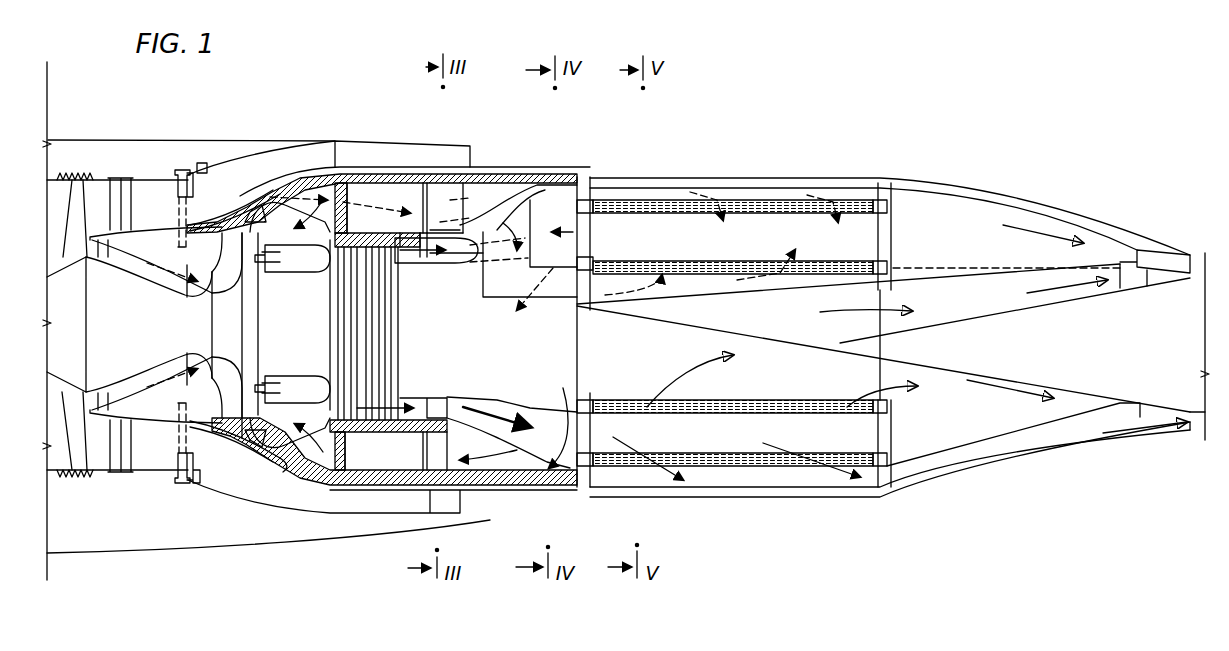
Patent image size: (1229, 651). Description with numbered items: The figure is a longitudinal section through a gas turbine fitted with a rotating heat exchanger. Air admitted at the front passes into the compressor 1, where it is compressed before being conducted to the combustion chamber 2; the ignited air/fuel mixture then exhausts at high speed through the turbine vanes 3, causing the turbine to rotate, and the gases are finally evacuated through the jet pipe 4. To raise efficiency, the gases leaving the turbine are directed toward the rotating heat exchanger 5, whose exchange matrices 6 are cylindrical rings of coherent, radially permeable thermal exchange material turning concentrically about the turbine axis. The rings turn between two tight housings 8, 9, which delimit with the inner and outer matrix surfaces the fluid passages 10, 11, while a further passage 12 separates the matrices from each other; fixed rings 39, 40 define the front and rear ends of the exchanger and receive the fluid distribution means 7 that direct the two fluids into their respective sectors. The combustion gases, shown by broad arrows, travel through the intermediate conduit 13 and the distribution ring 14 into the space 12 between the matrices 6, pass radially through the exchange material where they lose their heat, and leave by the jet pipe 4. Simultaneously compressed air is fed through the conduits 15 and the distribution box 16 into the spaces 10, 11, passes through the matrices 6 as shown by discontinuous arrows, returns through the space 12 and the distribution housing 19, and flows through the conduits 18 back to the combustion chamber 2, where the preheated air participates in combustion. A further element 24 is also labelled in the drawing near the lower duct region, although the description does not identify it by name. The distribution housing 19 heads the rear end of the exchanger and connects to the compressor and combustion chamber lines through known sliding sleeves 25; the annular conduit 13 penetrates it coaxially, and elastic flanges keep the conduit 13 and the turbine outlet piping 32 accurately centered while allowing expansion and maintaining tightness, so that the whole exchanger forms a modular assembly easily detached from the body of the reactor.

The compressor 1 is at (77, 331).
The combustion chamber 2 is at (283, 385).
The turbine vanes 3 is at (333, 330).
The jet pipe 4 is at (1163, 263).
The rotating heat exchanger 5 is at (668, 347).
The exchange matrices 6 is at (743, 263).
The fluid distribution means 7 is at (550, 338).
The tight housing 8 is at (810, 183).
The tight housing 9 is at (803, 297).
The fluid passage 10 is at (847, 197).
The fluid passage 11 is at (857, 283).
The passage 12 is at (853, 227).
The intermediate conduit 13 is at (440, 405).
The distribution ring 14 is at (566, 470).
The conduits 15 is at (473, 197).
The distribution box 16 is at (513, 217).
The conduits 18 is at (458, 492).
The distribution housing 19 is at (480, 492).
The core air duct 24 is at (291, 462).
The sliding sleeves 25 is at (372, 190).
The piping 32 is at (418, 235).
The fixed ring 39 is at (597, 187).
The fixed ring 40 is at (900, 227).